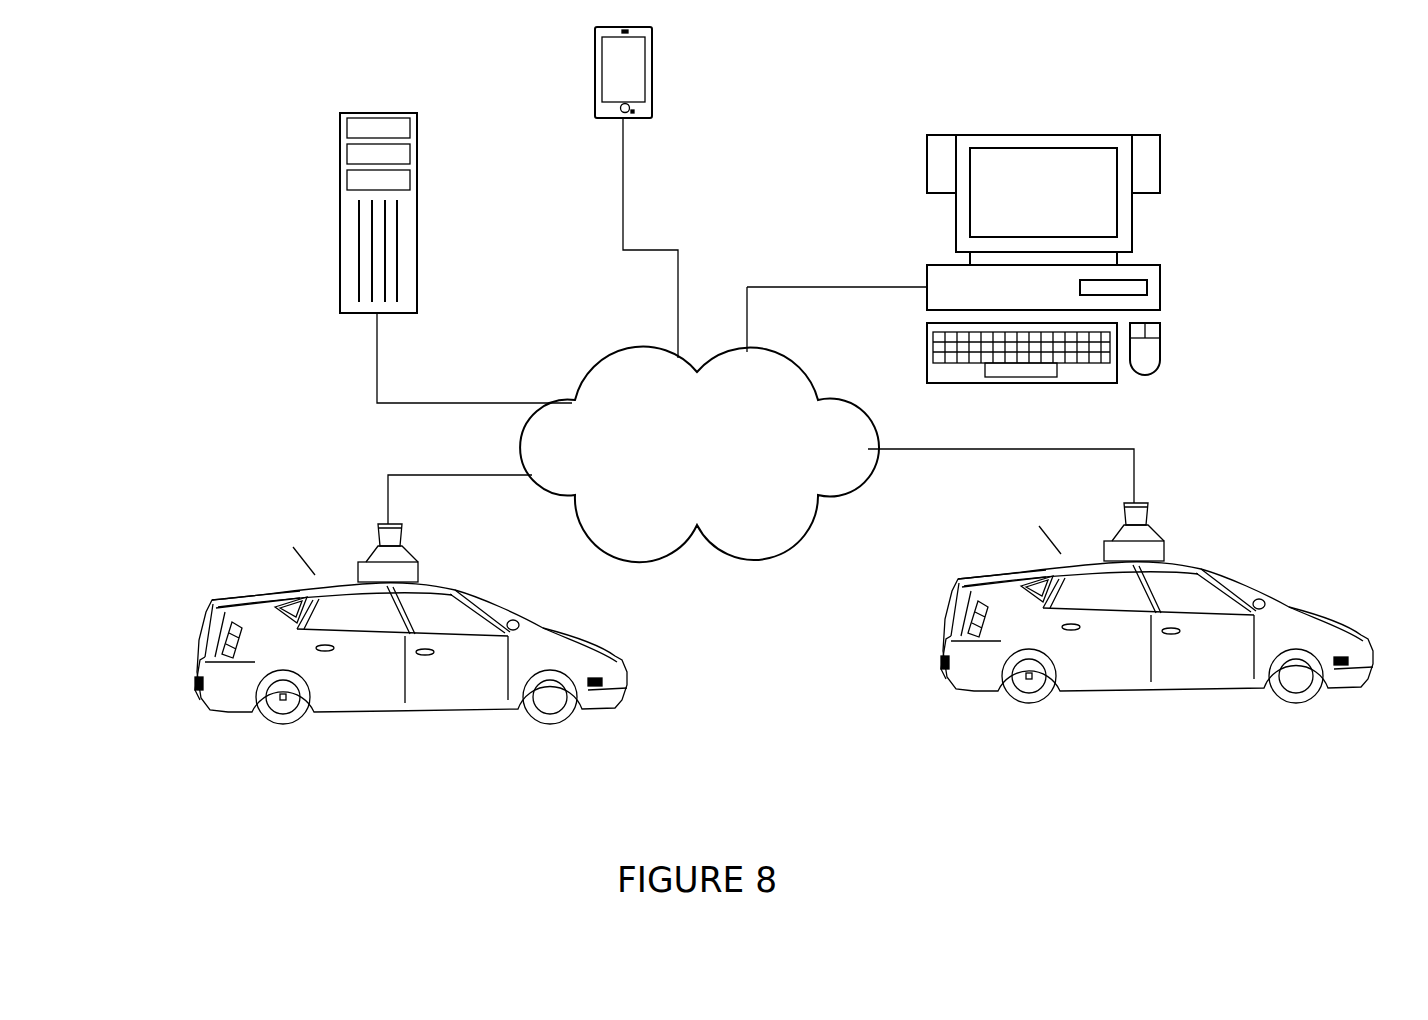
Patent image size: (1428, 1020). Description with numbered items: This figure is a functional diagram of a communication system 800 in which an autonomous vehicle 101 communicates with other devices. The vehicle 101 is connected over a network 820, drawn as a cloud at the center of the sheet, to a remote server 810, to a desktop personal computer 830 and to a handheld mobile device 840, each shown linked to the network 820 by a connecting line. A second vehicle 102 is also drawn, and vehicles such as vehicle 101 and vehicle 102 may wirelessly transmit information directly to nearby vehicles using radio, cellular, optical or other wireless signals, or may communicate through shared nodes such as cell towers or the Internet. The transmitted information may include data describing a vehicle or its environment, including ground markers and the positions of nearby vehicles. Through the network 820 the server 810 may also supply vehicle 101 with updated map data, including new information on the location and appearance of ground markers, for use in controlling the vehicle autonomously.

The system 800 is at (401, 39).
The remote server 810 is at (340, 128).
The network 820 is at (645, 350).
The client computing device 830 is at (956, 220).
The client computing device (mobile) 840 is at (595, 68).
The vehicle 101 is at (952, 588).
The vehicle 102 is at (210, 608).